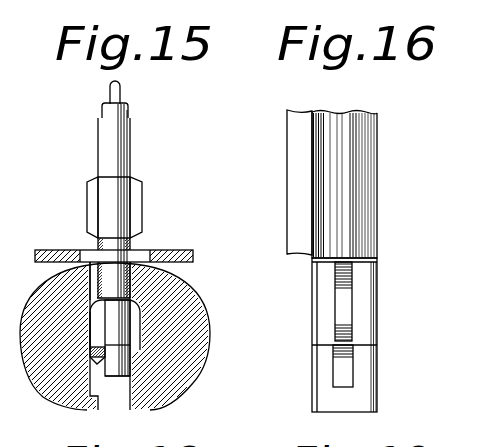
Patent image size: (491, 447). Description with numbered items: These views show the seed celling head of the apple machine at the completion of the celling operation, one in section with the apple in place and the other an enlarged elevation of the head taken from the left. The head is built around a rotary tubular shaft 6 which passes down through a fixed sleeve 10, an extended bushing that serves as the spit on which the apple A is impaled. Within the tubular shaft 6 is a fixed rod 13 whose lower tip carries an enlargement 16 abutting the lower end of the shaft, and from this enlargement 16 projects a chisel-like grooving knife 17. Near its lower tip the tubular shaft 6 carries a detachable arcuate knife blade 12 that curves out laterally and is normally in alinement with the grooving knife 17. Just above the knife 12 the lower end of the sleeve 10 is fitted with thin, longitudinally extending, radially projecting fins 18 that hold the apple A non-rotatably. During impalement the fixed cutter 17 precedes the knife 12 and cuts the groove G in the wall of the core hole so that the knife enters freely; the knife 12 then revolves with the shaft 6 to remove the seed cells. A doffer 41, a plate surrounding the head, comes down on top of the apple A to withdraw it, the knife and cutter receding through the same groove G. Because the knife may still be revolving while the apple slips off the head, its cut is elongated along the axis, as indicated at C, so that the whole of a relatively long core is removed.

In FIG. 15, the tubular shaft 6 is at (129, 112).
In FIG. 16, the tubular shaft 6 is at (372, 318).
In FIG. 15, the fixed sleeve 10 is at (127, 147).
In FIG. 16, the fixed sleeve 10 is at (345, 215).
In FIG. 15, the arcuate knife blade 12 is at (88, 342).
In FIG. 16, the arcuate knife blade 12 is at (345, 290).
In FIG. 15, the fixed rod 13 is at (121, 90).
In FIG. 15, the enlargement 16 is at (118, 377).
In FIG. 16, the enlargement 16 is at (375, 383).
In FIG. 15, the grooving knife 17 is at (91, 358).
In FIG. 16, the grooving knife 17 is at (345, 365).
In FIG. 15, the fins 18 is at (135, 192).
In FIG. 16, the fins 18 is at (370, 178).
In FIG. 15, the doffer 41 is at (175, 251).
In FIG. 15, the apple A is at (185, 298).
In FIG. 15, the elongated cut C is at (135, 335).
In FIG. 15, the groove G is at (89, 282).